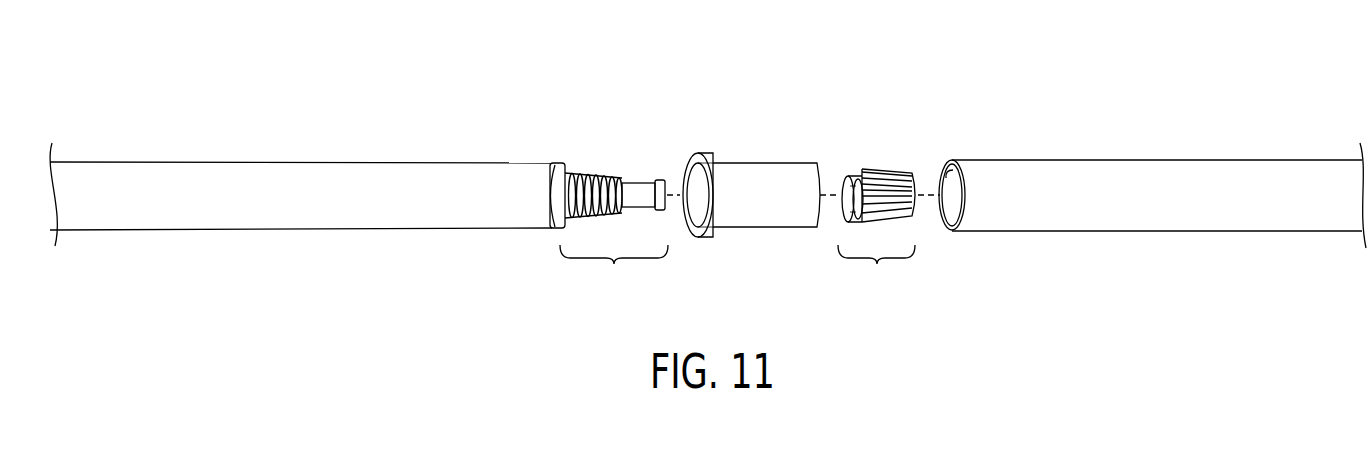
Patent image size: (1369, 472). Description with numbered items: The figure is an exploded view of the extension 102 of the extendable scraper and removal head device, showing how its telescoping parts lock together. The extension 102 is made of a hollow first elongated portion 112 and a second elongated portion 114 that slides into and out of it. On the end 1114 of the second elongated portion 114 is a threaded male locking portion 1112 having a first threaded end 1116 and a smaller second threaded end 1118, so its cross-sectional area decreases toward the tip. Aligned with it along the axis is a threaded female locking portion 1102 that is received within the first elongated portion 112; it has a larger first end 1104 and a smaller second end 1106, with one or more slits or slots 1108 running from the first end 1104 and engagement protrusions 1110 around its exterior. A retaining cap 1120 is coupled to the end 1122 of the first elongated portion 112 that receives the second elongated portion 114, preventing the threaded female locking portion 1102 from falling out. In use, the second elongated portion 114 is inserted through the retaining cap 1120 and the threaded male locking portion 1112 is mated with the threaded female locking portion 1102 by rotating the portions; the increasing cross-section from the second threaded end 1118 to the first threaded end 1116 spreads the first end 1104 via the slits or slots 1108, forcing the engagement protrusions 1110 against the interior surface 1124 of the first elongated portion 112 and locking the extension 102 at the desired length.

The extension 102 is at (755, 58).
The first elongated portion 112 is at (1170, 176).
The second elongated portion 114 is at (134, 214).
The threaded female locking portion 1102 is at (876, 271).
The first end 1104 is at (840, 184).
The second end 1106 is at (916, 171).
The slits or slots 1108 is at (850, 173).
The engagement protrusions 1110 is at (876, 170).
The threaded male locking portion 1112 is at (614, 271).
The end 1114 is at (549, 164).
The first threaded end 1116 is at (573, 171).
The second threaded end 1118 is at (620, 181).
The retaining cap 1120 is at (750, 210).
The end 1122 is at (952, 229).
The interior surface 1124 is at (948, 165).